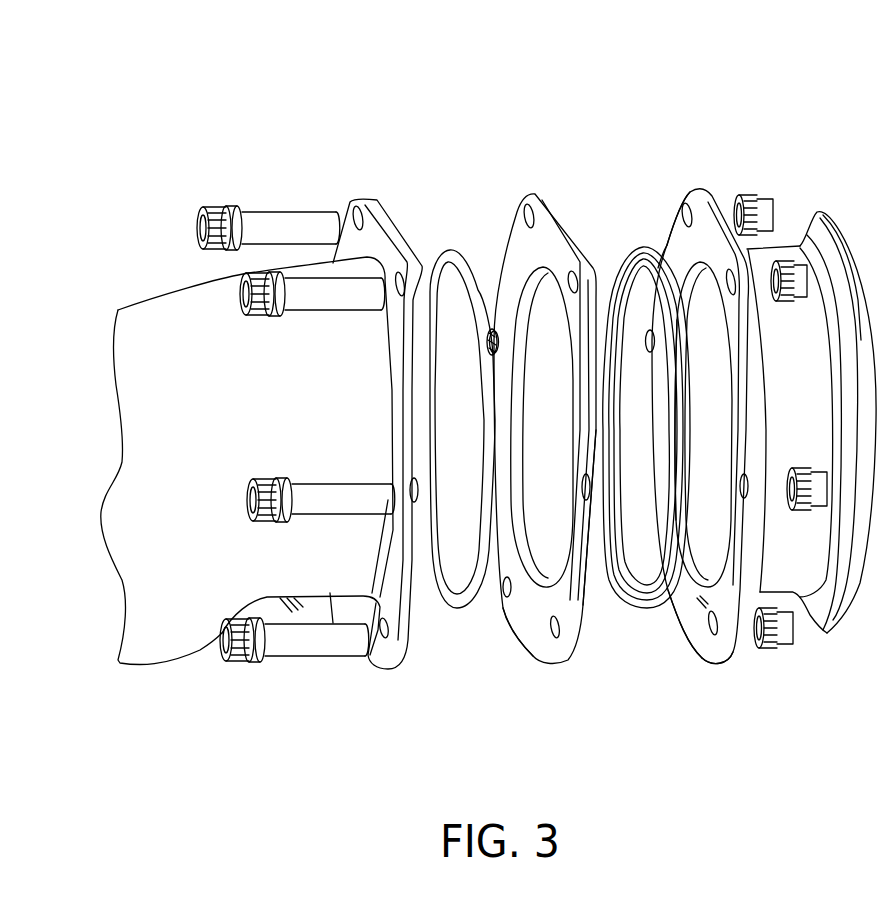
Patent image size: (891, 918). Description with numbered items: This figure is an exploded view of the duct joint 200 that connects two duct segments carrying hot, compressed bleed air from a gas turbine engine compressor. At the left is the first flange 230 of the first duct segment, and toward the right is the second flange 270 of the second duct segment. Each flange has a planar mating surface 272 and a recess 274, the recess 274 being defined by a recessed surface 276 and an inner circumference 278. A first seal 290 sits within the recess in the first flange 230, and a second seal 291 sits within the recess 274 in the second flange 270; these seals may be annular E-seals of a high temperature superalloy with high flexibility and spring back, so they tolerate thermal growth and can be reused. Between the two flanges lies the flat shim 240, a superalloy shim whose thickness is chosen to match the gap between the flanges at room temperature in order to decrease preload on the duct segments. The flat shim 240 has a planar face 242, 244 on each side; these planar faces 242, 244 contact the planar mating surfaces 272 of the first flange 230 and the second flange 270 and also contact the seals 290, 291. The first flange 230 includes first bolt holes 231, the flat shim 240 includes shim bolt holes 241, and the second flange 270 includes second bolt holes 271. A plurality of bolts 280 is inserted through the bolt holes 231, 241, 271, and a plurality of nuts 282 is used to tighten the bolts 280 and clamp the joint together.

The duct joint 200 is at (421, 130).
The first flange 230 is at (367, 197).
The first bolt holes 231 is at (370, 662).
The bolts 280 is at (262, 207).
The first seal 290 is at (446, 610).
The flat shim 240 is at (552, 665).
The shim bolt holes 241 is at (526, 220).
The planar face 242 is at (533, 637).
The planar face 244 is at (594, 619).
The second seal 291 is at (628, 268).
The second flange 270 is at (700, 192).
The second bolt holes 271 is at (727, 660).
The planar mating surface 272 is at (679, 242).
The recess 274 is at (692, 638).
The recessed surface 276 is at (678, 250).
The inner circumference 278 is at (678, 268).
The nuts 282 is at (770, 197).